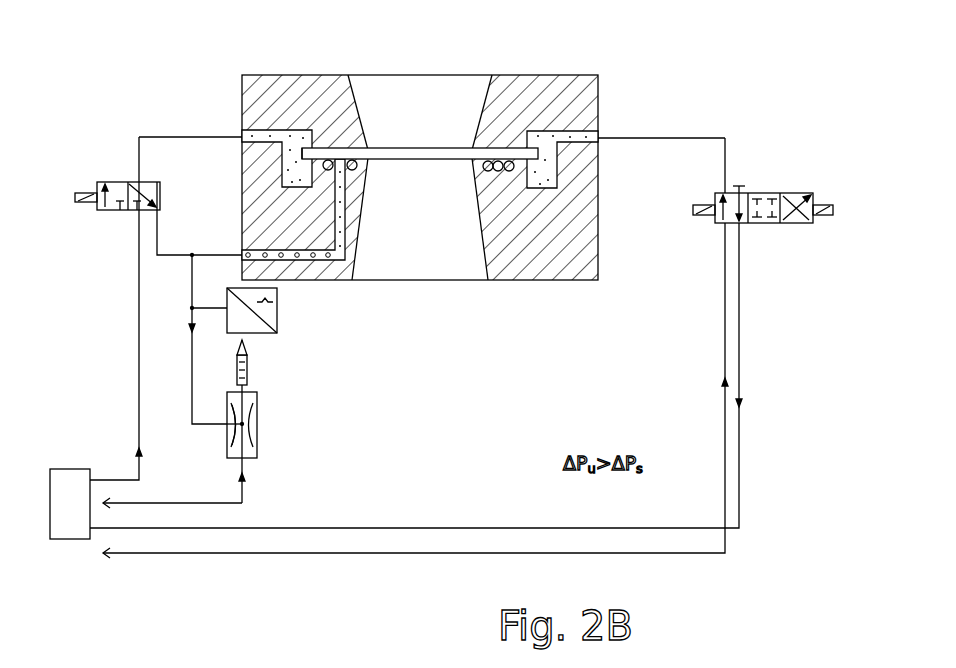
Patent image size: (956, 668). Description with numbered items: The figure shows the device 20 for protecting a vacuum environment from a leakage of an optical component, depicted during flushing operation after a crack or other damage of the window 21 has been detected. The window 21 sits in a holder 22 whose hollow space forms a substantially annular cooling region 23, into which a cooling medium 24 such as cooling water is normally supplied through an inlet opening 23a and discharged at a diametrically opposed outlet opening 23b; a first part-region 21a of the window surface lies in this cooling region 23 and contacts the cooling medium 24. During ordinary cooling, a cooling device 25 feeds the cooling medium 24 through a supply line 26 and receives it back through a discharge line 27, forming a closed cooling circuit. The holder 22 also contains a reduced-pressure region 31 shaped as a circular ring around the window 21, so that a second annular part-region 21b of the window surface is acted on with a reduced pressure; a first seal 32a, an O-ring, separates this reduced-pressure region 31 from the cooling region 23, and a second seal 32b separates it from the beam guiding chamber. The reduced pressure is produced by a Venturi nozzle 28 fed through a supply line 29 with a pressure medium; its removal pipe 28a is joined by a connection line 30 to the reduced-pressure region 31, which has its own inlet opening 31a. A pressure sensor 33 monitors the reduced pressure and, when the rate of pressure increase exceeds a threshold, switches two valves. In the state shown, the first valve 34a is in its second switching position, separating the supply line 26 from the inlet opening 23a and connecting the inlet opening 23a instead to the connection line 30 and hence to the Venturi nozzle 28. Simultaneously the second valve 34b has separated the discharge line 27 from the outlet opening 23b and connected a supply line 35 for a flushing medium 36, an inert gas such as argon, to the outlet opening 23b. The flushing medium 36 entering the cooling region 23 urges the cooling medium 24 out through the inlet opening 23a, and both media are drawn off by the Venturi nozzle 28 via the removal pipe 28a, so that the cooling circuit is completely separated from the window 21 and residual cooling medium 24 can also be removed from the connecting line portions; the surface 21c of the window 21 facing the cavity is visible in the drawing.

The device 20 is at (705, 86).
The window 21 is at (445, 148).
The first part-region 21a is at (307, 148).
The second annular part-region 21b is at (345, 170).
The membrane upper side 21c is at (422, 160).
The holder 22 is at (257, 86).
The cooling region 23 is at (292, 146).
The inlet opening 23a is at (242, 136).
The outlet opening 23b is at (598, 137).
The cooling medium 24 is at (242, 250).
The cooling device 25 is at (70, 470).
The supply line 26 is at (138, 393).
The discharge line 27 is at (739, 480).
The Venturi nozzle 28 is at (257, 448).
The removal pipe 28a is at (232, 435).
The supply line 29 is at (242, 490).
The connection line 30 is at (192, 350).
The reduced-pressure region 31 is at (323, 256).
The inlet opening 31a is at (242, 255).
The first seal 32a is at (333, 150).
The second seal 32b is at (354, 160).
The pressure sensor 33 is at (277, 315).
The first valve 34a is at (108, 163).
The second valve 34b is at (767, 178).
The supply line 35 is at (725, 322).
The flushing medium 36 is at (563, 131).